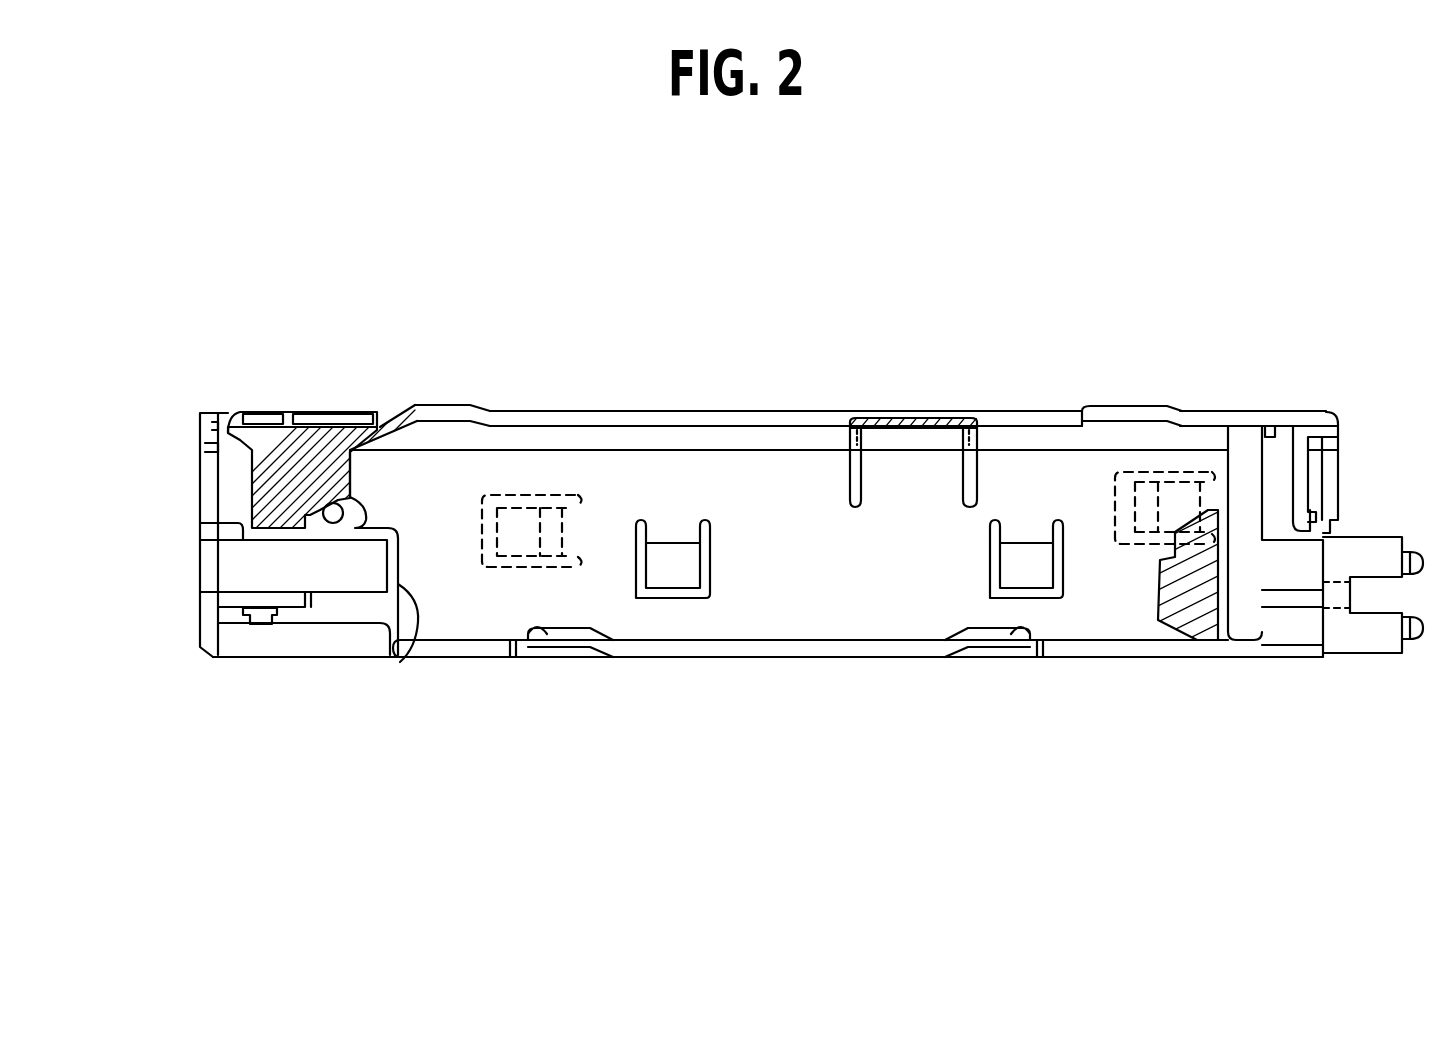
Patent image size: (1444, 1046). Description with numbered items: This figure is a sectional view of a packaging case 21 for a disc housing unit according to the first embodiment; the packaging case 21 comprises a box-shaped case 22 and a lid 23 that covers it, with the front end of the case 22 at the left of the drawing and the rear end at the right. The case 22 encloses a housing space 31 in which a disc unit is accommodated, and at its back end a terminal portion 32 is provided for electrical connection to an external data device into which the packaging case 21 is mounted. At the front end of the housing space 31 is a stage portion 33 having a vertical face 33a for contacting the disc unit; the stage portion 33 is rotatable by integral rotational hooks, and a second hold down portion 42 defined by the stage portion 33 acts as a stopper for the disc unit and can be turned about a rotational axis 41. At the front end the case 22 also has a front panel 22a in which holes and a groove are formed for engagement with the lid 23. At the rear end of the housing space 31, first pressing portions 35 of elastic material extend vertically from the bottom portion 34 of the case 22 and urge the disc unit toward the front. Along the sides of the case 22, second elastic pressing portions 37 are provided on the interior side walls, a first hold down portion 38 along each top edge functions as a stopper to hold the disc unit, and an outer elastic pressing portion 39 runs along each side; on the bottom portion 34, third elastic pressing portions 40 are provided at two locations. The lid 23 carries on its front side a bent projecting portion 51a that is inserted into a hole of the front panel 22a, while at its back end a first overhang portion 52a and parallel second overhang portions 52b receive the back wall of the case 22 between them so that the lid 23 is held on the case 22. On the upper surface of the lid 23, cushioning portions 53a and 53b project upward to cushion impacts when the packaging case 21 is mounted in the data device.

The packaging case 21 is at (676, 235).
The case 22 is at (790, 664).
The front panel 22a is at (200, 568).
The lid 23 is at (716, 408).
The housing space 31 is at (795, 487).
The terminal portion 32 is at (1374, 655).
The stage portion 33 is at (383, 522).
The vertical face 33a is at (407, 640).
The bottom portion 34 is at (1083, 658).
The first pressing portion 35 is at (1163, 593).
The second elastic pressing portion 37 is at (688, 572).
The first hold down portion 38 is at (928, 416).
The outer elastic pressing portion 39 is at (497, 567).
The third elastic pressing portion 40 is at (528, 640).
The rotational axis 41 is at (323, 522).
The second hold down portion 42 is at (245, 482).
The projecting portion 51a is at (195, 452).
The first overhang portion 52a is at (1305, 488).
The second overhang portion 52b is at (1336, 445).
The cushioning portion 53a is at (450, 406).
The cushioning portion 53b is at (1133, 404).